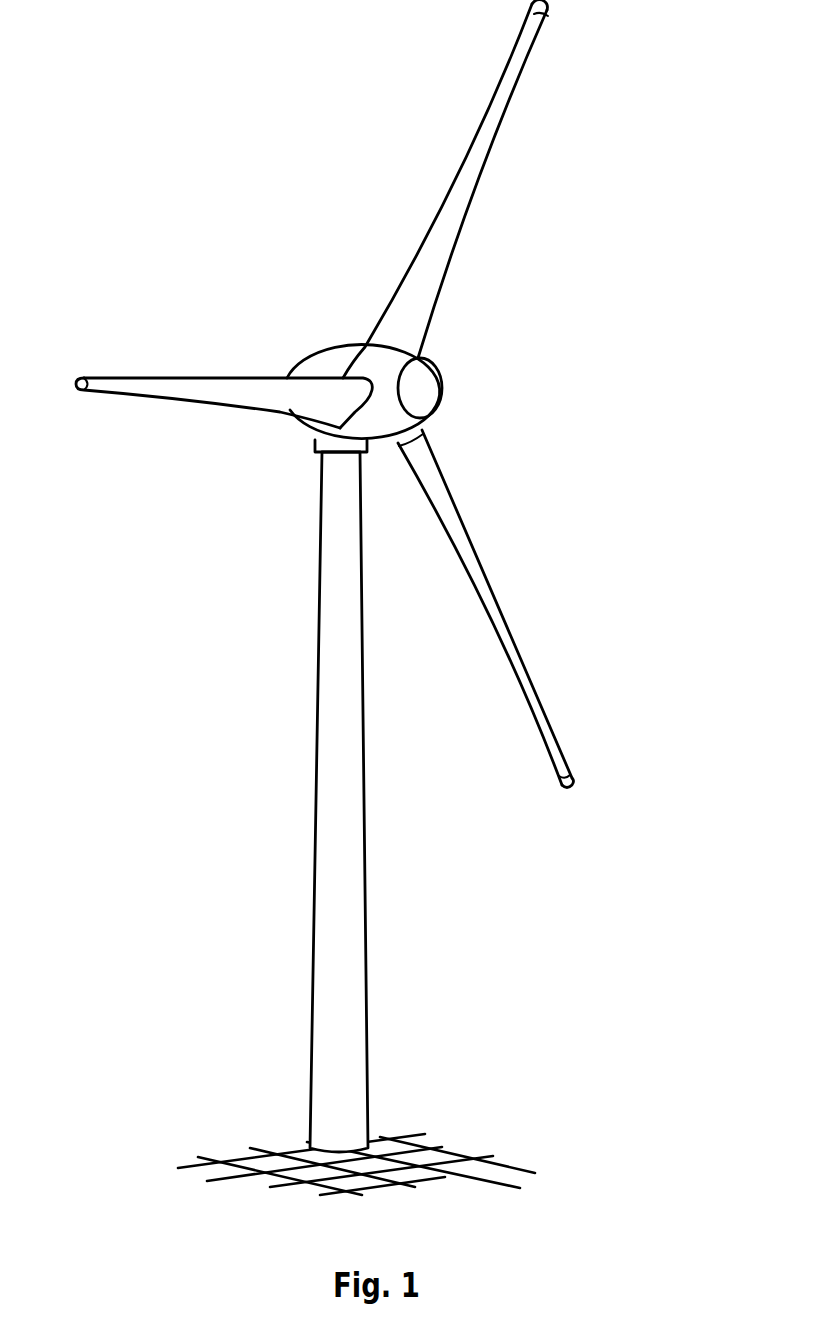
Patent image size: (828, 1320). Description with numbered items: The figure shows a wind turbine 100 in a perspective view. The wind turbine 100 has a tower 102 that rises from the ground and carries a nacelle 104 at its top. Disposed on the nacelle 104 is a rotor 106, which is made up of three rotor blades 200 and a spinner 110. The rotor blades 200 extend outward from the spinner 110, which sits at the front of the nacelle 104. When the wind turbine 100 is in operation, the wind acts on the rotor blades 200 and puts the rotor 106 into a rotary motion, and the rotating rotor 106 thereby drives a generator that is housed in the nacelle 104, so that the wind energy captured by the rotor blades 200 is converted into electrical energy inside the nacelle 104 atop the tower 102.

The wind turbine 100 is at (266, 533).
The tower 102 is at (347, 910).
The nacelle 104 is at (333, 364).
The rotor 106 is at (522, 305).
The spinner 110 is at (425, 391).
The rotor blades 200 is at (488, 133).